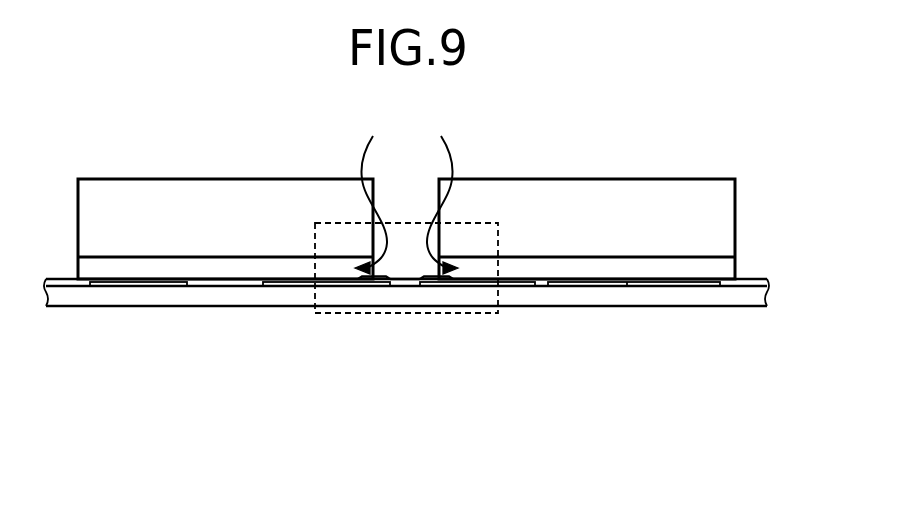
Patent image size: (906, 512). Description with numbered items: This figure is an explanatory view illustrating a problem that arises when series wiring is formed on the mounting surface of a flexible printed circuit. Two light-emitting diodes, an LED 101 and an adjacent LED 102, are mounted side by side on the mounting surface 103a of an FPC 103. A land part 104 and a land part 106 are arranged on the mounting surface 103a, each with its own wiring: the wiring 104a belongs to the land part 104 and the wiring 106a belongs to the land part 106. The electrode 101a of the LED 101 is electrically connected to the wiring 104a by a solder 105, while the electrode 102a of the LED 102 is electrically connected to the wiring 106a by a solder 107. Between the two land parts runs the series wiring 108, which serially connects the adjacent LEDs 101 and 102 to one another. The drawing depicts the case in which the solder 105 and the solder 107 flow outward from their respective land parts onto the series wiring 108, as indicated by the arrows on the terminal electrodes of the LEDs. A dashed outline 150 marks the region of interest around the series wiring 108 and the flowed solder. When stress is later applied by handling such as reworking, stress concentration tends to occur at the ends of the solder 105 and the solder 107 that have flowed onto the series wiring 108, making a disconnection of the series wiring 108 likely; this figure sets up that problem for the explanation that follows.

The LED 101 is at (227, 179).
The LED 102 is at (515, 179).
The FPC 103 is at (627, 295).
The mounting surface 103a is at (587, 286).
The electrode 101a is at (279, 286).
The electrode 102a is at (536, 286).
The land part 104 is at (374, 193).
The wiring 104a is at (335, 286).
The solder 105 is at (380, 279).
The land part 106 is at (440, 193).
The wiring 106a is at (475, 286).
The solder 107 is at (433, 279).
The series wiring 108 is at (410, 279).
The mounting region 150 is at (315, 222).